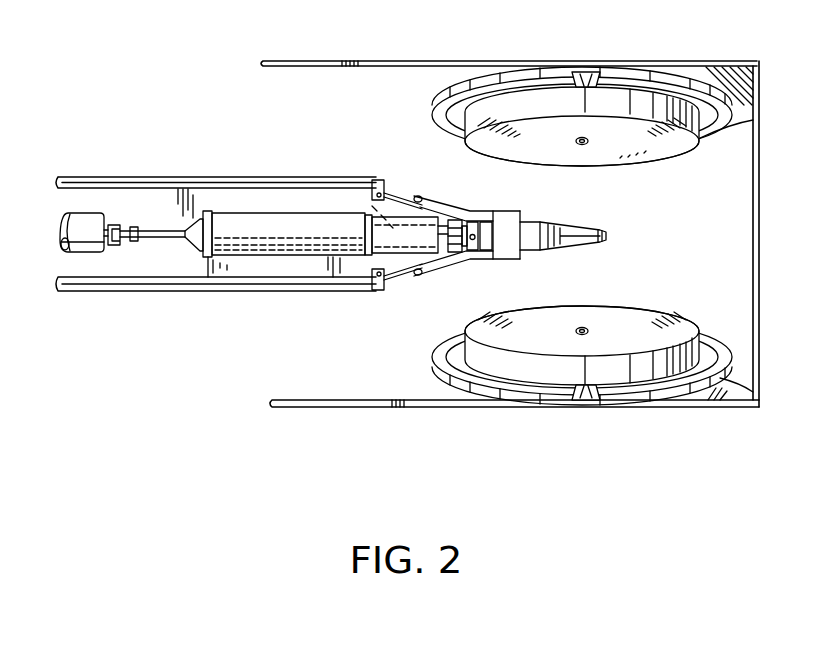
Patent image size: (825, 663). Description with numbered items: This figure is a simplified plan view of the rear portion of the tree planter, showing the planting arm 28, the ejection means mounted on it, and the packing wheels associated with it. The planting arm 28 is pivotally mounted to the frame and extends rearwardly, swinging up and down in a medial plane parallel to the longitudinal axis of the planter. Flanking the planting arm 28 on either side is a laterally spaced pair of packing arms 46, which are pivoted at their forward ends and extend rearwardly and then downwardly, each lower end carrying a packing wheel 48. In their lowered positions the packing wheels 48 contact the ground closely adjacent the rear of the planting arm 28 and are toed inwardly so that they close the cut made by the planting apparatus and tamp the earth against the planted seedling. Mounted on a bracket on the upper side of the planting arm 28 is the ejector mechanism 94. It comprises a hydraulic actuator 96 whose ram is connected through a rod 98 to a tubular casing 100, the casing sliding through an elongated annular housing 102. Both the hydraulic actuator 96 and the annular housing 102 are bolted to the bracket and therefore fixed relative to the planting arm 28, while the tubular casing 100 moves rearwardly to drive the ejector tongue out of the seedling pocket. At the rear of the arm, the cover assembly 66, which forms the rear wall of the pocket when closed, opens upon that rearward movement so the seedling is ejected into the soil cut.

The planting arm 28 is at (105, 300).
The packing arms 46 is at (452, 416).
The packing wheels 48 is at (618, 152).
The cover assembly 66 is at (537, 226).
The ejector mechanism 94 is at (254, 203).
The hydraulic actuator 96 is at (82, 222).
The rod 98 is at (152, 232).
The tubular casing 100 is at (391, 254).
The annular housing 102 is at (299, 236).